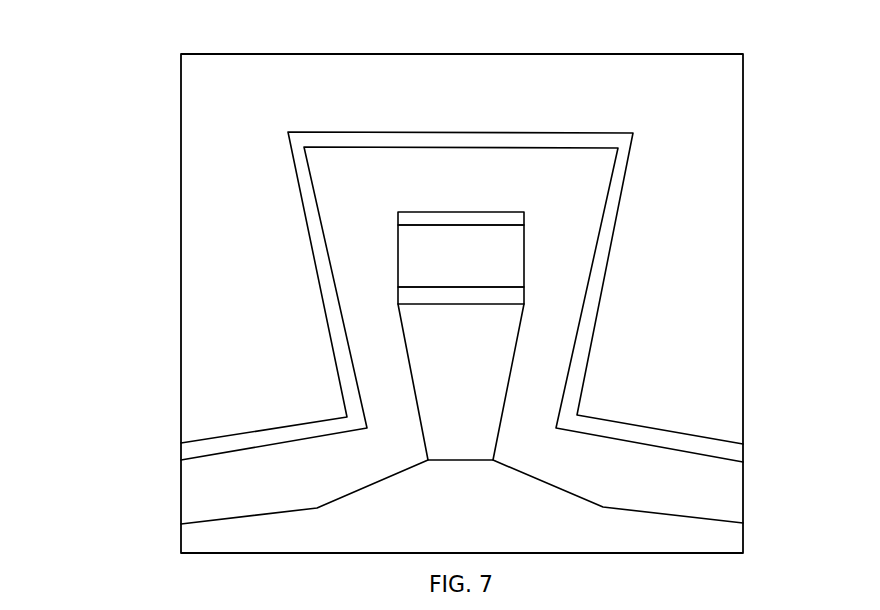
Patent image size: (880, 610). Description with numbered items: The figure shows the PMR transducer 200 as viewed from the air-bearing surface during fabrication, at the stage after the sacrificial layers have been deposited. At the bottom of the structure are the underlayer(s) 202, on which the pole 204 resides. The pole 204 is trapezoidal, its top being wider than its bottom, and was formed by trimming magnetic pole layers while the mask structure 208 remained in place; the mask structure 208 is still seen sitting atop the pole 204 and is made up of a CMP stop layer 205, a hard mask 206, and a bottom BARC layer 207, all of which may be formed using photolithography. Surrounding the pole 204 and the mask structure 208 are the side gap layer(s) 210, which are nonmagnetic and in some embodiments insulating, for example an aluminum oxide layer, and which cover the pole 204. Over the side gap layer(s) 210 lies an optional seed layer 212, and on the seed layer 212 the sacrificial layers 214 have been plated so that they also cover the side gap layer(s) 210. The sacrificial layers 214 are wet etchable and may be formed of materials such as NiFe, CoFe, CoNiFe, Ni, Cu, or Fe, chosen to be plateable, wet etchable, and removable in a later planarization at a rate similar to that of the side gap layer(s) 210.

The PMR transducer 200 is at (442, 34).
The underlayer(s) 202 is at (743, 540).
The pole 204 is at (508, 380).
The CMP stop layer 205 is at (398, 297).
The hard mask 206 is at (398, 268).
The bottom BARC layer 207 is at (398, 212).
The mask structure 208 is at (575, 241).
The side gap layer(s) 210 is at (181, 490).
The seed layer 212 is at (181, 451).
The sacrificial layers 214 is at (181, 327).